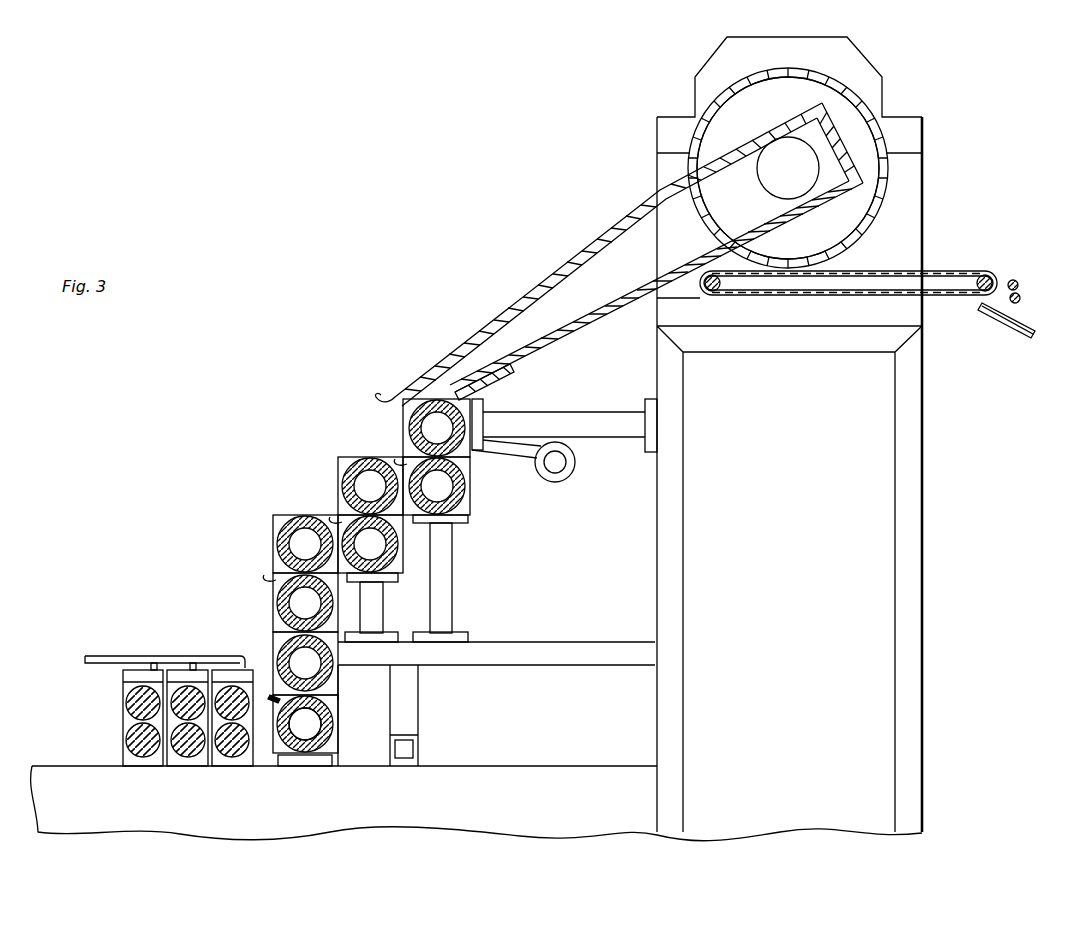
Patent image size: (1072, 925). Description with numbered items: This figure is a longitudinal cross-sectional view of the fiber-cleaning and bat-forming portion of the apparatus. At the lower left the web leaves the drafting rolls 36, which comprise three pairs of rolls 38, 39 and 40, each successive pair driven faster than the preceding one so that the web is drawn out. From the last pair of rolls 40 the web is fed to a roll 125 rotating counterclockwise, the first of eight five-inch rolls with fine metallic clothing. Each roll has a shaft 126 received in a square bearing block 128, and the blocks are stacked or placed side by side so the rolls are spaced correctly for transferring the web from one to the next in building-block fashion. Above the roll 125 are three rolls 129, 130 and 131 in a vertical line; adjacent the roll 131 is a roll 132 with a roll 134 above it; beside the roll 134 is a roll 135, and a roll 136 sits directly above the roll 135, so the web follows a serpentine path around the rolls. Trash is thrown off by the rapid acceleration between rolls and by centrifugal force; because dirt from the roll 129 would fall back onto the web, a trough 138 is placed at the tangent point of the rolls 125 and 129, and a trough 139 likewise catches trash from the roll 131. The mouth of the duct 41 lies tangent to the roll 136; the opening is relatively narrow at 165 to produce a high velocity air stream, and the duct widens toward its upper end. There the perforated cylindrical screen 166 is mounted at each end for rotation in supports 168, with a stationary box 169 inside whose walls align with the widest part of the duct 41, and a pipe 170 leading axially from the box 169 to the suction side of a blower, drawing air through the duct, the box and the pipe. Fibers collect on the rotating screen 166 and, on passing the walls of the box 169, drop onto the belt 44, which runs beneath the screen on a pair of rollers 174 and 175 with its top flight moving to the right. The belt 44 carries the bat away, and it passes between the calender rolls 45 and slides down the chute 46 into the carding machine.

The drafting rolls 36 is at (166, 725).
The pair of rolls 38 is at (145, 758).
The pair of rolls 39 is at (177, 759).
The pair of rolls 40 is at (222, 759).
The duct 41 is at (502, 322).
The belt 44 is at (966, 271).
The calender rolls 45 is at (1020, 289).
The chute 46 is at (1022, 323).
The roll 125 is at (333, 719).
The shaft 126 is at (303, 734).
The bearing block 128 is at (340, 703).
The roll 129 is at (337, 661).
The roll 130 is at (272, 589).
The roll 131 is at (272, 538).
The roll 132 is at (393, 563).
The roll 134 is at (360, 458).
The roll 135 is at (465, 491).
The roll 136 is at (452, 407).
The trough 138 is at (272, 696).
The trough 139 is at (272, 577).
The narrow opening of duct 165 is at (437, 382).
The perforated cylindrical screen 166 is at (708, 220).
The supports 168 is at (672, 112).
The box 169 is at (773, 127).
The pipe 170 is at (771, 188).
The roller 174 is at (706, 294).
The roller 175 is at (992, 276).